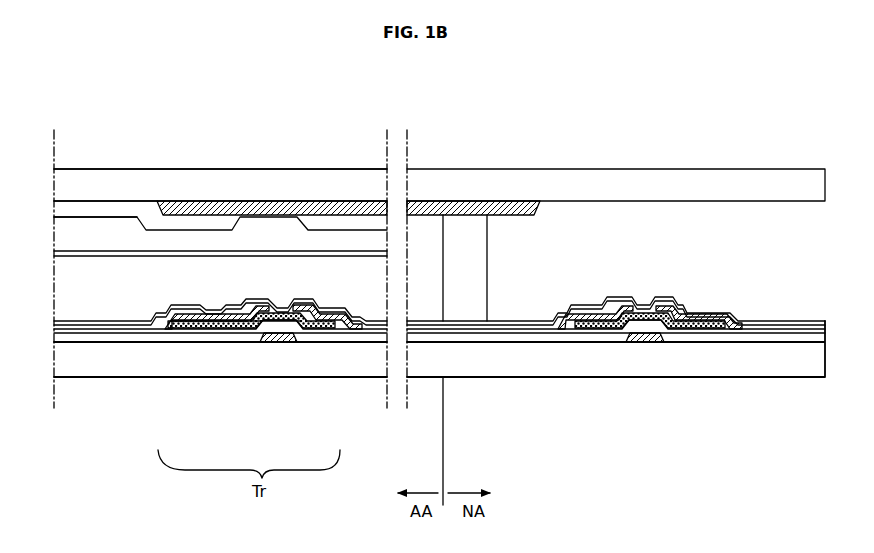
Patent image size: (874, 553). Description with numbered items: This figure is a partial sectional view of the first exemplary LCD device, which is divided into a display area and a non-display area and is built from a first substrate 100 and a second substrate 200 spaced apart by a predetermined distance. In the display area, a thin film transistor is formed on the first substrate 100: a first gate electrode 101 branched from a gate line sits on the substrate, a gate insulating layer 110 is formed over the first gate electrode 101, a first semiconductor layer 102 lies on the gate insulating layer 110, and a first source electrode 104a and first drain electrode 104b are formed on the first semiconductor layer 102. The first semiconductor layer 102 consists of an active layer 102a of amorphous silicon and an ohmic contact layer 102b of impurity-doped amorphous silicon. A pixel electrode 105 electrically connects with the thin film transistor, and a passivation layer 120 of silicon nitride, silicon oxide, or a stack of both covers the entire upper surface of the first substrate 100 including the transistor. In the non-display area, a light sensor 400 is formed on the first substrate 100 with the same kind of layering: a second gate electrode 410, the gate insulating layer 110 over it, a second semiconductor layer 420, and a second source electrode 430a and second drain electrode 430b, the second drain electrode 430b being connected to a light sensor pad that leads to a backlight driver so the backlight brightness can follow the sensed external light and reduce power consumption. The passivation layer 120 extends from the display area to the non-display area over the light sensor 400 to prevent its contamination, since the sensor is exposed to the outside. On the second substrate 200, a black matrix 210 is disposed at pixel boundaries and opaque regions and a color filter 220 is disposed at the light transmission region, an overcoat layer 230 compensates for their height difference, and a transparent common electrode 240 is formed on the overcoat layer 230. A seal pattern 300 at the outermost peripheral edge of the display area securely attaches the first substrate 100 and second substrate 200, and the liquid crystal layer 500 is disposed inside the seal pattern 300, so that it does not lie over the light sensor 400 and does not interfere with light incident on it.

The first substrate 100 is at (797, 362).
The first gate electrode 101 is at (283, 343).
The first semiconductor layer 102 is at (260, 420).
The active layer 102a is at (248, 330).
The ohmic contact layer 102b is at (210, 330).
The first source electrode 104a is at (345, 325).
The first drain electrode 104b is at (173, 327).
The pixel electrode 105 is at (122, 322).
The gate insulating layer 110 is at (90, 337).
The passivation layer 120 is at (320, 304).
The second substrate 200 is at (760, 176).
The black matrix 210 is at (348, 204).
The color filter 220 is at (113, 212).
The overcoat layer 230 is at (262, 223).
The common electrode 240 is at (80, 252).
The seal pattern 300 is at (475, 256).
The light sensor 400 is at (645, 290).
The second gate electrode 410 is at (655, 339).
The second semiconductor layer 420 is at (612, 329).
The second source electrode 430a is at (583, 331).
The second drain electrode 430b is at (713, 331).
The liquid crystal layer 500 is at (103, 270).